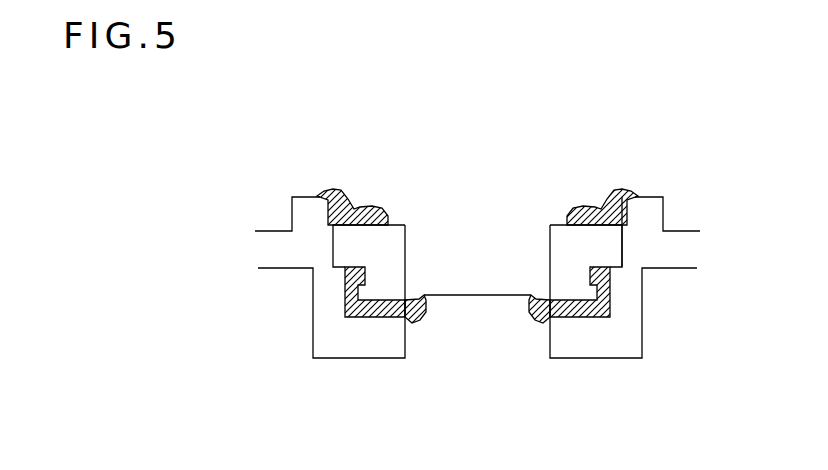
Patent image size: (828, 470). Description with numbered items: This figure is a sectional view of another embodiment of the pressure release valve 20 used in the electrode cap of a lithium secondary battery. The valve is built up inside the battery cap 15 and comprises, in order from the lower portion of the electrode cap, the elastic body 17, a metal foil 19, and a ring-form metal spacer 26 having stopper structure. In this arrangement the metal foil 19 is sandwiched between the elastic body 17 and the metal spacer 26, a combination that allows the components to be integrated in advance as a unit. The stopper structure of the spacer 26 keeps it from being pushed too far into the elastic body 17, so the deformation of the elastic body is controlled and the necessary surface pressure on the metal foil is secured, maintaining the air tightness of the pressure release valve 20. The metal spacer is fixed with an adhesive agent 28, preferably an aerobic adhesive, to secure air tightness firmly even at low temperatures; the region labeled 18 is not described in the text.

The battery cap 15 is at (268, 252).
The elastic body 17 is at (432, 317).
The diaphragm plate 18 is at (480, 370).
The metal foil 19 is at (503, 303).
The pressure release valve 20 is at (527, 158).
The ring-form metal spacer 26 is at (400, 254).
The adhesive agent 28 is at (340, 193).